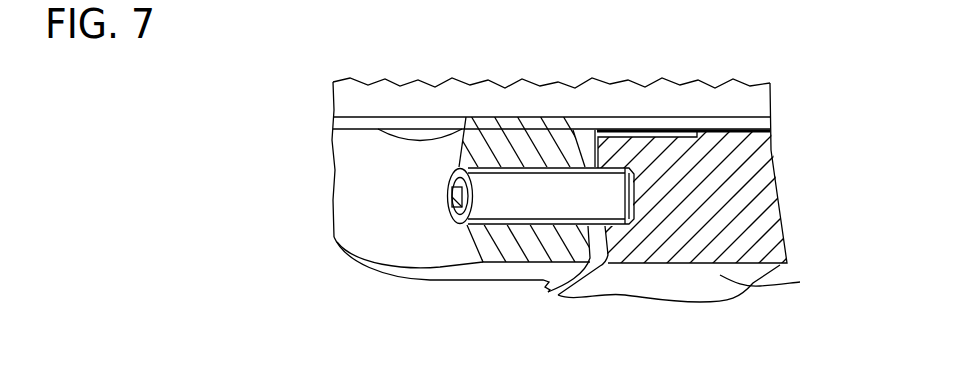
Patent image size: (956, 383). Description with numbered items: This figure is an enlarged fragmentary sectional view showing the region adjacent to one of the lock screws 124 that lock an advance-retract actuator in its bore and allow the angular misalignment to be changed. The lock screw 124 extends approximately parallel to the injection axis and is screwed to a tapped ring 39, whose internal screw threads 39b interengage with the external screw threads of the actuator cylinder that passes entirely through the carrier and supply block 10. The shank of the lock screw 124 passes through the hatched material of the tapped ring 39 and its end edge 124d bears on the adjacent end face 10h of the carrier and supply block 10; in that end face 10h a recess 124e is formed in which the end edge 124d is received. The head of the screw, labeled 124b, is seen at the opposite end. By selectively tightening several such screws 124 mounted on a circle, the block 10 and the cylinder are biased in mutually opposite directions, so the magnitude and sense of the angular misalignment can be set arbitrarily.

The carrier and supply block 10 is at (686, 233).
The end face 10h is at (592, 265).
The tapped ring 39 is at (529, 283).
The internal screw threads 39b is at (493, 117).
The lock screw 124 is at (440, 178).
The pin head 124b is at (449, 214).
The end edge 124d is at (640, 212).
The recess 124e is at (637, 130).